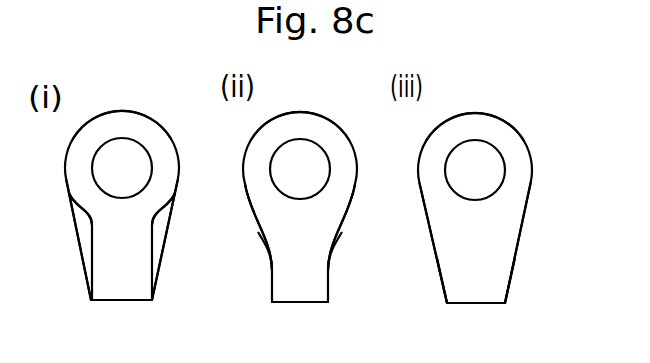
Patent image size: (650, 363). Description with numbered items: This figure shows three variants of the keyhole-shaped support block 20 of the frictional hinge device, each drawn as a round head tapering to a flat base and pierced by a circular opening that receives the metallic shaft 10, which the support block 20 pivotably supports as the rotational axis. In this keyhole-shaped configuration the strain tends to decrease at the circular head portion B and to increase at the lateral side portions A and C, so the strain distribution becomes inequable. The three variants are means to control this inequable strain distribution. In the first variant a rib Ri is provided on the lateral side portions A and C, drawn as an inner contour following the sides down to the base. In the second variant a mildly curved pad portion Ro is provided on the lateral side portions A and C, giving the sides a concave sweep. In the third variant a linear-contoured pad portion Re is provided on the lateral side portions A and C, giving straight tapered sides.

The metallic shaft 10 is at (128, 158).
The support block 20 is at (164, 158).
The lateral side portion A is at (249, 242).
The circular head portion B is at (299, 109).
The lateral side portion C is at (349, 241).
The rib Ri is at (81, 258).
The mildly curved pad portion Ro is at (266, 262).
The linear-contoured pad portion Re is at (437, 264).